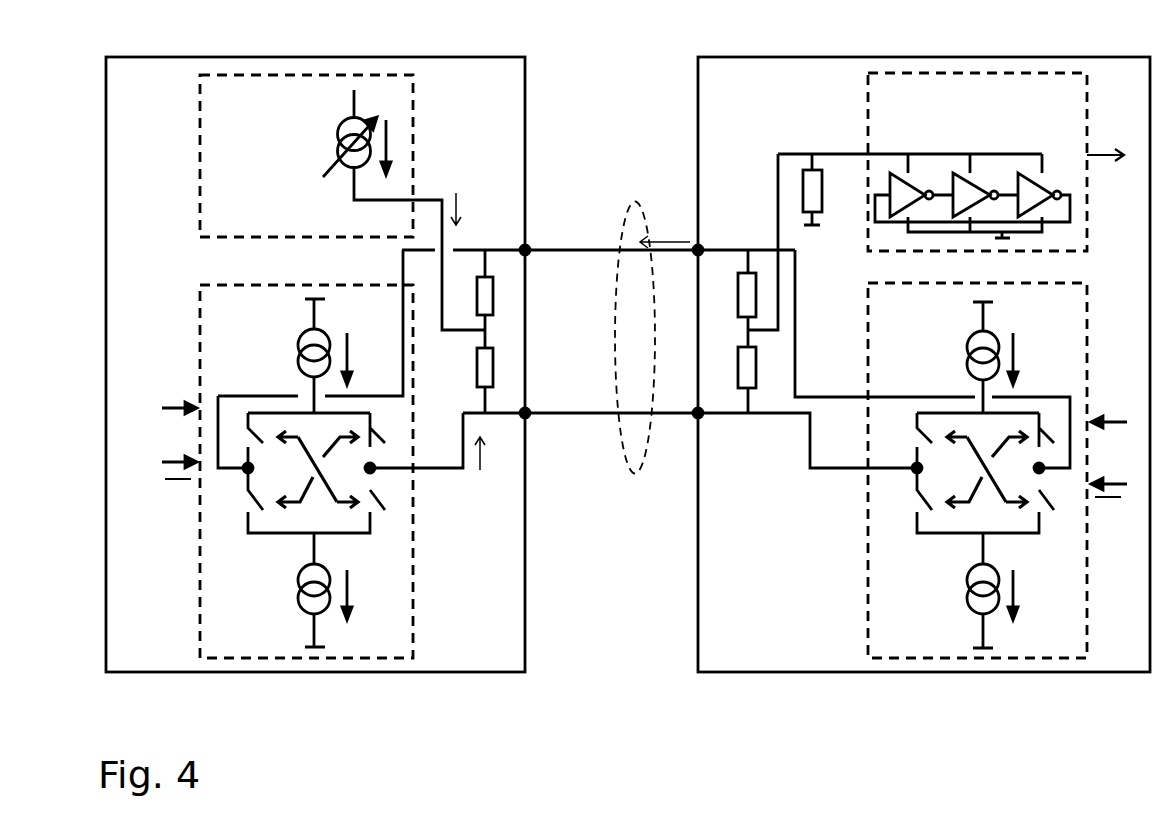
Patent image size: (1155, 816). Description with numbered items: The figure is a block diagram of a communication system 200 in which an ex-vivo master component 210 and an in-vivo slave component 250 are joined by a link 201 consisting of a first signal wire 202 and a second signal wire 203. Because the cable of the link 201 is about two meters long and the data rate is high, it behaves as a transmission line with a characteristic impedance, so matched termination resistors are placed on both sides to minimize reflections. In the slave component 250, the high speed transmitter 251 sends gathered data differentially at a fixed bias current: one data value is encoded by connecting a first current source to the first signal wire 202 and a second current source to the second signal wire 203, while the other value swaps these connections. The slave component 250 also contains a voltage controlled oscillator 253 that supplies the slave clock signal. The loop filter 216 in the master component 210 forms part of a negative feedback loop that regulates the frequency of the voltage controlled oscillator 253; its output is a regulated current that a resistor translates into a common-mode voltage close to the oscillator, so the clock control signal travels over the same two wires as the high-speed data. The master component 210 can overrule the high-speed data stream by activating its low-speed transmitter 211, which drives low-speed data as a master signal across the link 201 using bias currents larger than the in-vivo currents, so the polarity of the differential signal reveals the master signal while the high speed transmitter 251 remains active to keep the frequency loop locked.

The communication system 200 is at (633, 76).
The link 201 is at (633, 473).
The first signal wire 202 is at (571, 250).
The second signal wire 203 is at (575, 413).
The master component 210 is at (170, 94).
The low-speed transmitter 211 is at (268, 361).
The loop filter 216 is at (268, 191).
The slave component 250 is at (763, 104).
The high speed transmitter 251 is at (916, 361).
The voltage controlled oscillator 253 is at (978, 117).